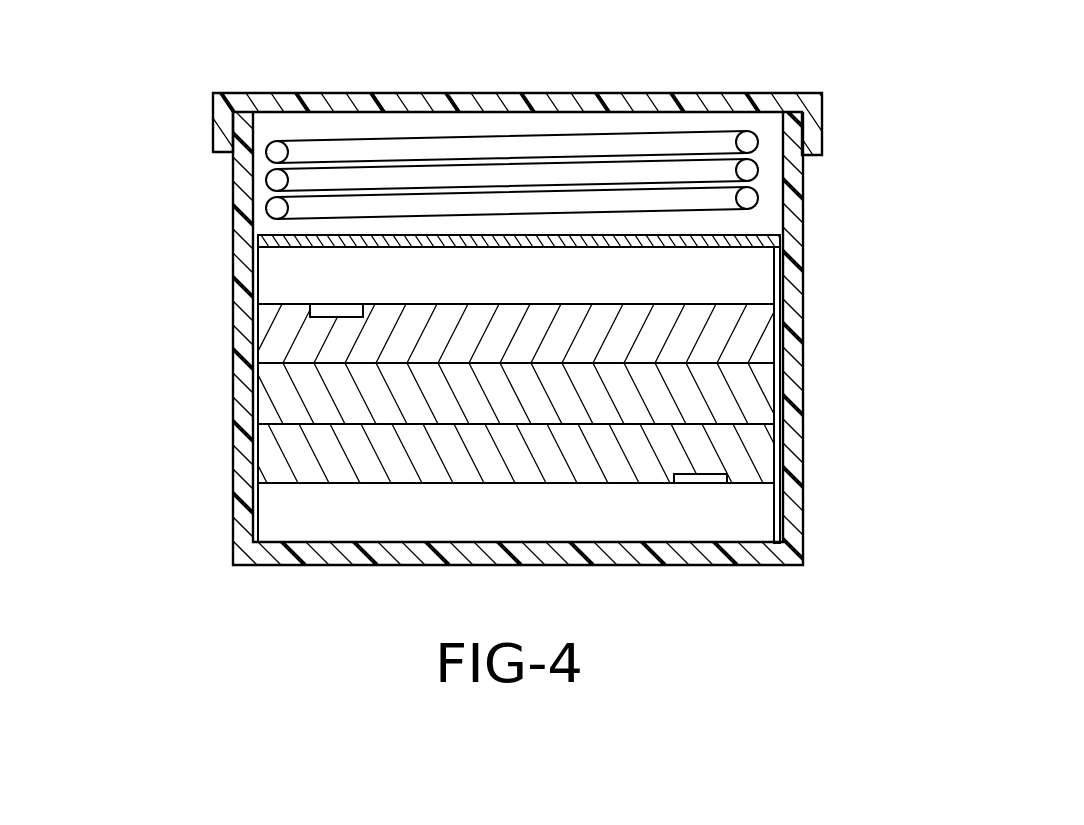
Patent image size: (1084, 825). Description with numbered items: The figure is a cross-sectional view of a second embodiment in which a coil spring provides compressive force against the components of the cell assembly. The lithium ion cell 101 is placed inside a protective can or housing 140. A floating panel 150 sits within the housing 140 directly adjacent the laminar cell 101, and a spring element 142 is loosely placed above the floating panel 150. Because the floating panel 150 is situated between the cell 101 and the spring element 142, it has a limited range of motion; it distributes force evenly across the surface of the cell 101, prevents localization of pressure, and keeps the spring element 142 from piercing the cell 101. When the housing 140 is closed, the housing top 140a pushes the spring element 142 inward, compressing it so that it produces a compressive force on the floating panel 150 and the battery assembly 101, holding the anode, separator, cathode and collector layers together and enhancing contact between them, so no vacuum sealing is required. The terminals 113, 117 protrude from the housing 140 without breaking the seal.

The housing top 140a is at (646, 93).
The protective housing 140 is at (803, 517).
The spring element 142 is at (752, 172).
The floating panel 150 is at (777, 241).
The lithium ion cell 101 is at (258, 383).
The terminal 113 is at (332, 307).
The terminal 117 is at (703, 479).